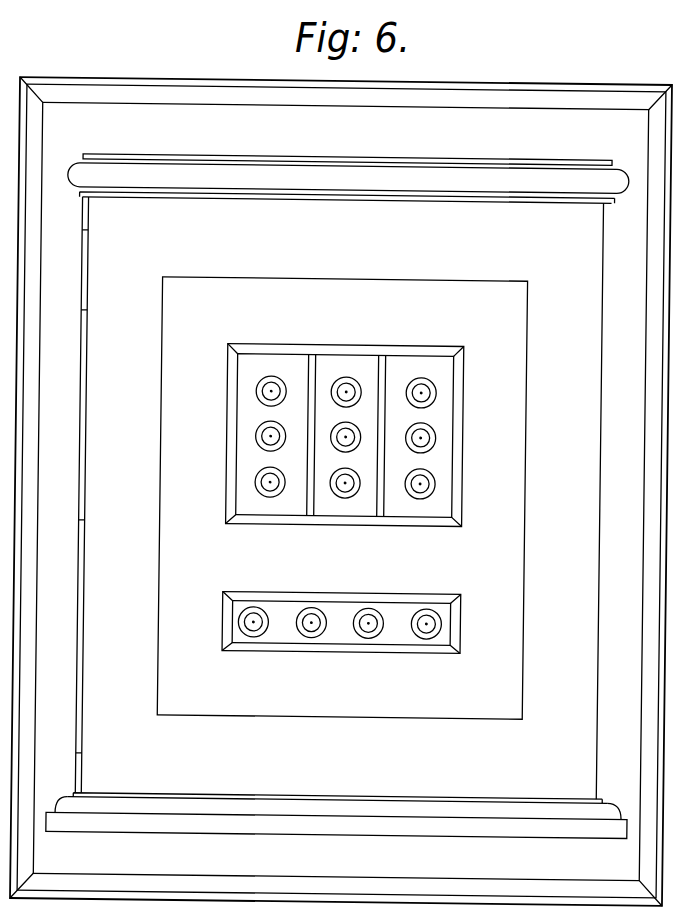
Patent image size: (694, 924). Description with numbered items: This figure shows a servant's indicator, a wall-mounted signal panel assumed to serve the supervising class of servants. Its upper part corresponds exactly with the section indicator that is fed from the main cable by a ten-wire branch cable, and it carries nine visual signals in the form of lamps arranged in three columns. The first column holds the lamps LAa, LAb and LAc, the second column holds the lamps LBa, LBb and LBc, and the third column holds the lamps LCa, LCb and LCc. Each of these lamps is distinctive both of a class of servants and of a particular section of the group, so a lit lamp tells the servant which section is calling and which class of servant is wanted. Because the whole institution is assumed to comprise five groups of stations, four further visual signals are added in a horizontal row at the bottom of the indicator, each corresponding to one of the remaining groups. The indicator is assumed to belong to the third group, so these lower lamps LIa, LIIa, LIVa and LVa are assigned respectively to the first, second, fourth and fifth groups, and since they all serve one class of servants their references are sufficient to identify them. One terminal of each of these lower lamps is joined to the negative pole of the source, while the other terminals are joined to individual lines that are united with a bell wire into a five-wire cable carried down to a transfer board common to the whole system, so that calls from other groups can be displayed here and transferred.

The lamp LAa is at (274, 381).
The lamp LAb is at (268, 426).
The lamp LAc is at (270, 472).
The lamp LBa is at (351, 382).
The lamp LBb is at (345, 427).
The lamp LBc is at (347, 473).
The lamp LCa is at (424, 383).
The lamp LCb is at (421, 428).
The lamp LCc is at (421, 474).
The visual indicator lamp LIa is at (257, 649).
The visual indicator lamp LIIa is at (316, 649).
The visual indicator lamp LIVa is at (377, 651).
The visual indicator lamp LVa is at (432, 652).